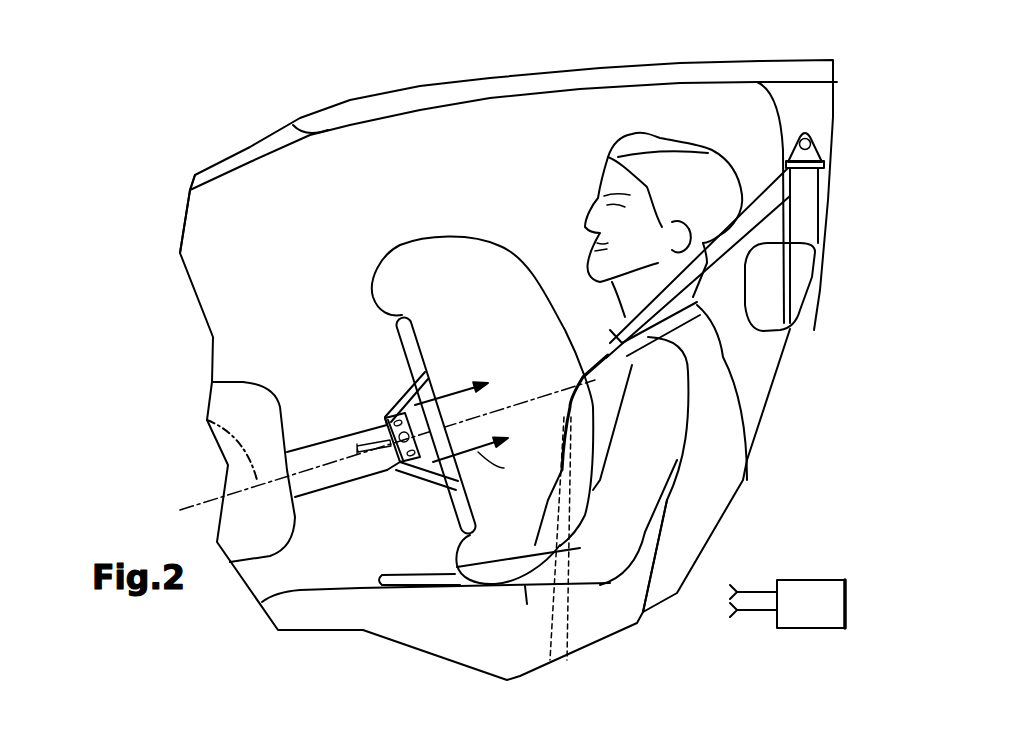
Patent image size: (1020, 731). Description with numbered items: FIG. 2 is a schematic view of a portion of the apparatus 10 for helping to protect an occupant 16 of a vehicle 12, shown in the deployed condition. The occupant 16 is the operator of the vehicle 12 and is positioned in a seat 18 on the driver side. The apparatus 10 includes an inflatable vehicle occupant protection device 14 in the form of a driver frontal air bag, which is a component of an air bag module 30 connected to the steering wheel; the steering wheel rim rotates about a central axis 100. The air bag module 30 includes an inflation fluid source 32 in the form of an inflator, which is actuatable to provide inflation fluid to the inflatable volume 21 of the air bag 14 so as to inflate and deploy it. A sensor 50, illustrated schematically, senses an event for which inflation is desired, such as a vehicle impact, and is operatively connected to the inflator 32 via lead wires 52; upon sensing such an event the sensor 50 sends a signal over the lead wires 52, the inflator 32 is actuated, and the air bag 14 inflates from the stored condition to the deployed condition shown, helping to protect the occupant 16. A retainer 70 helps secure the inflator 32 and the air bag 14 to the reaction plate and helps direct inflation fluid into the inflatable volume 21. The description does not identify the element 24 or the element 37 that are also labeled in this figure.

The apparatus 10 is at (227, 115).
The vehicle 12 is at (295, 77).
The vehicle body 24 is at (182, 147).
The inflatable vehicle occupant protection device 14 is at (472, 283).
The occupant 16 is at (670, 168).
The seat 18 is at (705, 507).
The inflatable volume 21 is at (438, 329).
The air bag module 30 is at (411, 479).
The inflation fluid source 32 is at (383, 437).
The steering axis 37 is at (522, 397).
The sensor 50 is at (820, 613).
The lead wires 52 is at (386, 447).
The retainer 70 is at (388, 412).
The central axis 100 is at (205, 420).